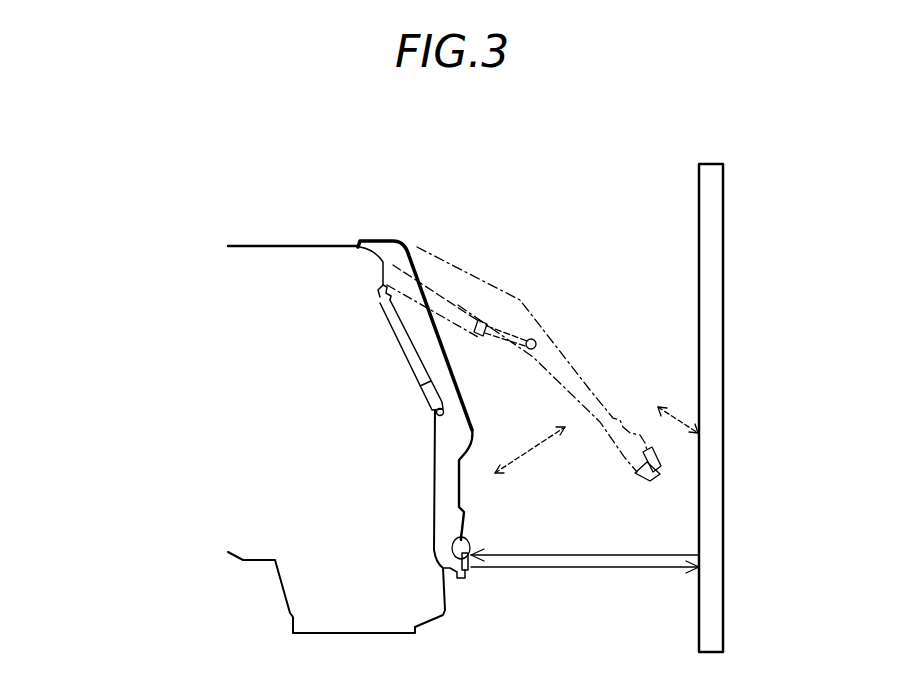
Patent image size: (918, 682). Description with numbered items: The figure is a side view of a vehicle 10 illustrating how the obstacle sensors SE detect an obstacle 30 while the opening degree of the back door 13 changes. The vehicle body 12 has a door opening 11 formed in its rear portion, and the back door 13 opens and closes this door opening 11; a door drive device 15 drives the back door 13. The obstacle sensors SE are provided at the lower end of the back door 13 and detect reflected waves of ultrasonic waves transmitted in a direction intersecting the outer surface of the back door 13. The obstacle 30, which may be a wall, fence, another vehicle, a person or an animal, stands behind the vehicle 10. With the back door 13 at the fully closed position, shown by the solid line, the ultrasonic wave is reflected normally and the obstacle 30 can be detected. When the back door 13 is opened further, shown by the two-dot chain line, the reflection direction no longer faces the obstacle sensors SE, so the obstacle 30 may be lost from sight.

The vehicle 10 is at (176, 165).
The door opening 11 is at (436, 484).
The vehicle body 12 is at (291, 246).
The back door 13 is at (418, 246).
The door drive device 15 is at (403, 325).
The obstacle 30 is at (723, 598).
The obstacle sensors SE is at (468, 540).